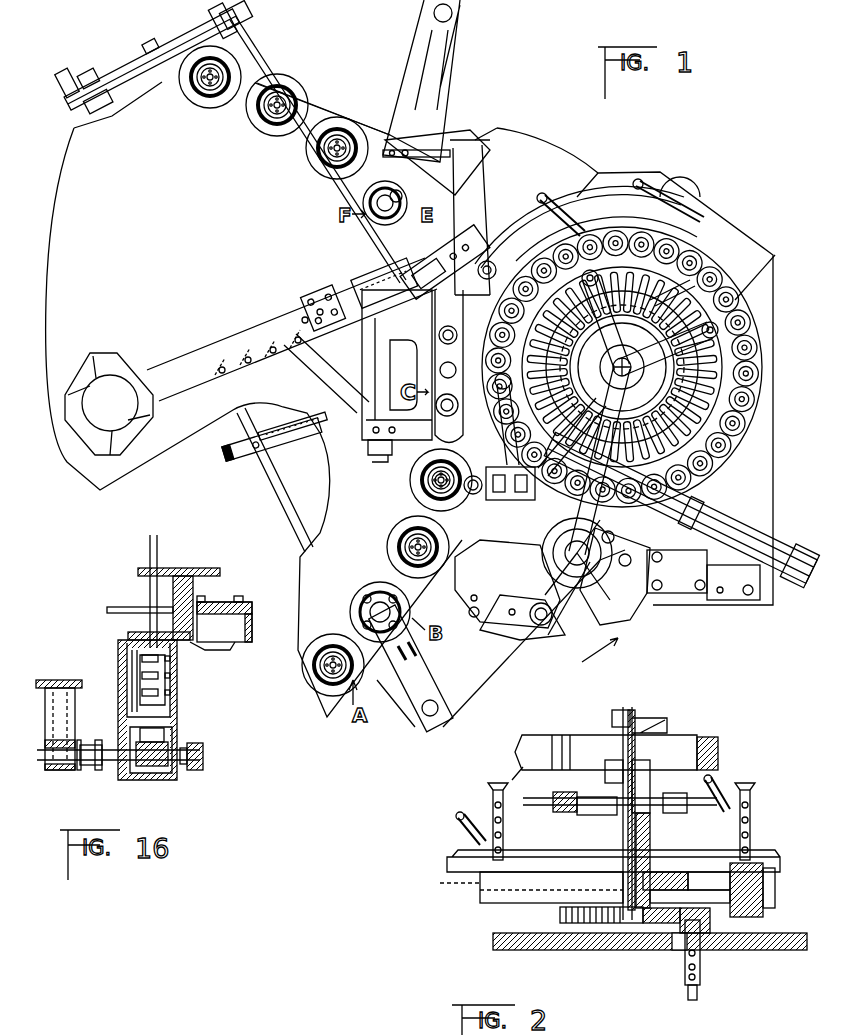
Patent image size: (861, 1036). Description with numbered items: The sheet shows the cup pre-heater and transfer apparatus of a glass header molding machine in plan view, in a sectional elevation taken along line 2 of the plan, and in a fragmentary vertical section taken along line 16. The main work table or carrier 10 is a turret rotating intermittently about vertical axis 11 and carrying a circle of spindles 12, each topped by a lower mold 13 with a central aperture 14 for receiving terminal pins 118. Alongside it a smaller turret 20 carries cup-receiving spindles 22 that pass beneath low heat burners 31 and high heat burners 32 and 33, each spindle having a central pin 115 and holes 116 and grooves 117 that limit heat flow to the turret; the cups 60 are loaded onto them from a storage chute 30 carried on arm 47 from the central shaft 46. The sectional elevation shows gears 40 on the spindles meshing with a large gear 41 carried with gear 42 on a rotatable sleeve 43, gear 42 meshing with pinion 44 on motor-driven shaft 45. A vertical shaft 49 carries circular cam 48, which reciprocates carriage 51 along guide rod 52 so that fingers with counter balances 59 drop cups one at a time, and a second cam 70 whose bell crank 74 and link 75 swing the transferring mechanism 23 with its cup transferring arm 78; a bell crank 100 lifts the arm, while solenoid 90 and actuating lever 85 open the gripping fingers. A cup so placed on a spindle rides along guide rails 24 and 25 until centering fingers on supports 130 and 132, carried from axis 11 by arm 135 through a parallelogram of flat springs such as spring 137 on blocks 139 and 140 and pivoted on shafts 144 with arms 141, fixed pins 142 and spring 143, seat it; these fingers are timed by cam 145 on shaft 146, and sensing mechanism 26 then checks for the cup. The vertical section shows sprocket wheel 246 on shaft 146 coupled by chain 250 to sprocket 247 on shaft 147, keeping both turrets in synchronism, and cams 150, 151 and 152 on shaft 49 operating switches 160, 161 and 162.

In FIG. 1, the work table or carrier 10 is at (305, 88).
In FIG. 1, the vertical axis 11 is at (114, 378).
In FIG. 1, the spindles 12 is at (213, 88).
In FIG. 1, the cap piece or lower mold 13 is at (330, 680).
In FIG. 1, the central aperture 14 is at (495, 383).
In FIG. 1, the section line 16— 16 is at (507, 497).
In FIG. 1, the rotatable turret 20 is at (640, 378).
In FIG. 2, the rotatable turret 20 is at (480, 883).
In FIG. 1, the cup-receiving spindles 22 is at (750, 326).
In FIG. 2, the cup-receiving spindles 22 is at (492, 812).
In FIG. 1, the transferring mechanism 23 is at (450, 440).
In FIG. 1, the guide rail 24 is at (430, 383).
In FIG. 1, the guide rail 25 is at (430, 356).
In FIG. 1, the sensing mechanism 26 is at (405, 190).
In FIG. 1, the storage chute 30 is at (690, 514).
In FIG. 1, the low heat gas burners 31 is at (749, 457).
In FIG. 2, the low heat gas burners 31 is at (695, 808).
In FIG. 1, the high heat burner 32 is at (535, 220).
In FIG. 2, the high heat burner 32 is at (465, 834).
In FIG. 1, the high heat burner 33 is at (690, 225).
In FIG. 2, the high heat burner 33 is at (725, 778).
In FIG. 2, the gears 40 is at (763, 888).
In FIG. 2, the large gear 41 is at (708, 872).
In FIG. 1, the large gear 42 is at (724, 378).
In FIG. 2, the large gear 42 is at (580, 940).
In FIG. 2, the rotatable sleeve 43 is at (660, 872).
In FIG. 1, the pinion gear 44 is at (678, 301).
In FIG. 2, the pinion gear 44 is at (710, 922).
In FIG. 2, the shaft 45 is at (700, 990).
In FIG. 1, the central shaft 46 is at (632, 372).
In FIG. 2, the central shaft 46 is at (632, 712).
In FIG. 1, the arm 47 is at (622, 367).
In FIG. 1, the circular cam 48 is at (598, 608).
In FIG. 1, the vertical shaft 49 is at (577, 567).
In FIG. 16, the vertical shaft 49 is at (147, 553).
In FIG. 1, the carriage 51 is at (615, 576).
In FIG. 1, the guide rod 52 is at (703, 575).
In FIG. 1, the counter balances 59 is at (572, 437).
In FIG. 2, the glass cups 60 is at (490, 788).
In FIG. 1, the second cam 70 is at (545, 550).
In FIG. 1, the bell crank 74 is at (593, 618).
In FIG. 1, the link 75 is at (505, 570).
In FIG. 1, the cup transferring arm 78 is at (455, 405).
In FIG. 1, the actuating lever 85 is at (496, 466).
In FIG. 1, the solenoid 90 is at (481, 537).
In FIG. 1, the bell crank 100 is at (535, 618).
In FIG. 1, the central pin 115 is at (706, 467).
In FIG. 2, the holes 116 is at (503, 838).
In FIG. 2, the grooves 117 is at (503, 810).
In FIG. 1, the terminal pins 118 is at (428, 478).
In FIG. 1, the support 130 is at (499, 216).
In FIG. 1, the support 132 is at (370, 270).
In FIG. 1, the arm 135 is at (190, 340).
In FIG. 1, the flat spring 137 is at (338, 348).
In FIG. 1, the block 139 is at (315, 285).
In FIG. 1, the block 140 is at (454, 292).
In FIG. 1, the arms 141 is at (470, 219).
In FIG. 1, the fixed pins 142 is at (470, 203).
In FIG. 1, the spring 143 is at (468, 186).
In FIG. 1, the shafts 144 is at (341, 364).
In FIG. 1, the cam 145 is at (78, 106).
In FIG. 1, the shaft 146 is at (84, 72).
In FIG. 16, the shaft 147 is at (112, 768).
In FIG. 16, the cam 150 is at (142, 658).
In FIG. 16, the cam 151 is at (142, 675).
In FIG. 16, the cam 152 is at (142, 692).
In FIG. 16, the switch 160 is at (170, 660).
In FIG. 16, the switch 161 is at (170, 677).
In FIG. 16, the switch 162 is at (170, 693).
In FIG. 1, the sprocket wheel 246 is at (240, 462).
In FIG. 16, the sprocket 247 is at (42, 770).
In FIG. 1, the chain 250 is at (312, 442).
In FIG. 1, the section line 2— 2 is at (755, 277).